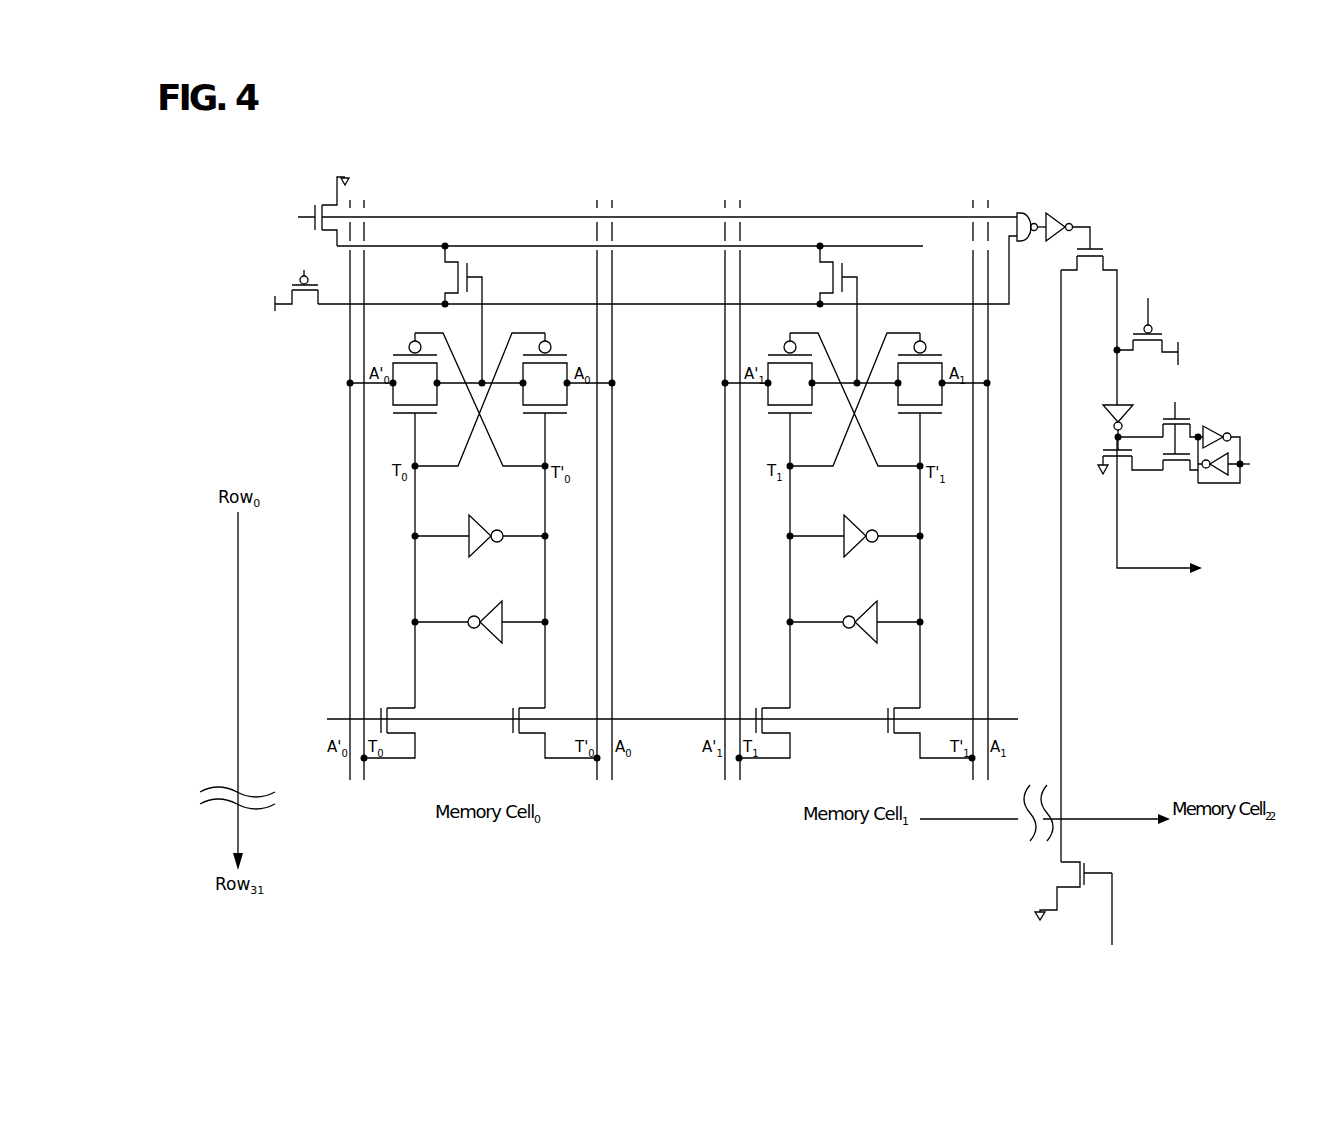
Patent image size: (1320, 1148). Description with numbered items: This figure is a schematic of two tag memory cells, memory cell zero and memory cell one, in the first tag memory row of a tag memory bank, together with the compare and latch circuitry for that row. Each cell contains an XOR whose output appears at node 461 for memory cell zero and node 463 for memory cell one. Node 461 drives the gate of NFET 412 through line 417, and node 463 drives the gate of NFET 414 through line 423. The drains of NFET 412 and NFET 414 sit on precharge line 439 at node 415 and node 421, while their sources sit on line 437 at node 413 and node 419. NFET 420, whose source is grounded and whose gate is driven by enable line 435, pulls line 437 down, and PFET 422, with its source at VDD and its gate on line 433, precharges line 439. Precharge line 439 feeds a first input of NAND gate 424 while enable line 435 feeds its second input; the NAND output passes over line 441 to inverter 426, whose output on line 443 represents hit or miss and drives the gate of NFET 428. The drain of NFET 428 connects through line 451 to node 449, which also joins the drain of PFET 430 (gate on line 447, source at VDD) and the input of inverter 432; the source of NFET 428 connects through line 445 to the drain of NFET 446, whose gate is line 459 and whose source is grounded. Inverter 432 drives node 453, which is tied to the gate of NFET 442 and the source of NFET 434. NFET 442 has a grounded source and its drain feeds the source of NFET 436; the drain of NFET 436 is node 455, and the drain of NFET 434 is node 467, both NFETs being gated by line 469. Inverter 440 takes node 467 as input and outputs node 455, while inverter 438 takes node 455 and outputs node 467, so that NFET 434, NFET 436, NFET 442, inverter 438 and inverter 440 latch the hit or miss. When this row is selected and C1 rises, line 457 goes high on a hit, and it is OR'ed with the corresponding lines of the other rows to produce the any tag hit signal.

The NFET 412 is at (447, 244).
The node 413 is at (444, 249).
The NFET 414 is at (822, 244).
The node 415 is at (445, 306).
The line 417 is at (485, 323).
The node 419 is at (819, 249).
The NFET 420 is at (335, 233).
The node 421 is at (821, 307).
The PFET 422 is at (291, 297).
The line 423 is at (857, 330).
The NAND gate 424 is at (1022, 213).
The inverter 426 is at (1055, 213).
The NFET 428 is at (1105, 254).
The PFET 430 is at (1165, 337).
The inverter 432 is at (1132, 408).
The line 433 is at (306, 271).
The NFET 434 is at (1163, 420).
The enable line 435 is at (553, 215).
The NFET 436 is at (1150, 470).
The line 437 is at (517, 248).
The inverter 438 is at (1220, 478).
The precharge line 439 is at (622, 300).
The inverter 440 is at (1217, 432).
The line 441 is at (1041, 229).
The NFET 442 is at (1098, 462).
The line 443 is at (1093, 235).
The line 445 is at (1061, 380).
The NFET 446 is at (1068, 862).
The line 447 is at (1148, 300).
The node 449 is at (1115, 350).
The line 451 is at (1117, 383).
The node 453 is at (1117, 437).
The node 455 is at (1245, 466).
The line 457 is at (1117, 570).
The line 459 is at (1112, 900).
The node 461 is at (484, 380).
The node 463 is at (858, 381).
The node 467 is at (1198, 435).
The line 469 is at (1175, 402).